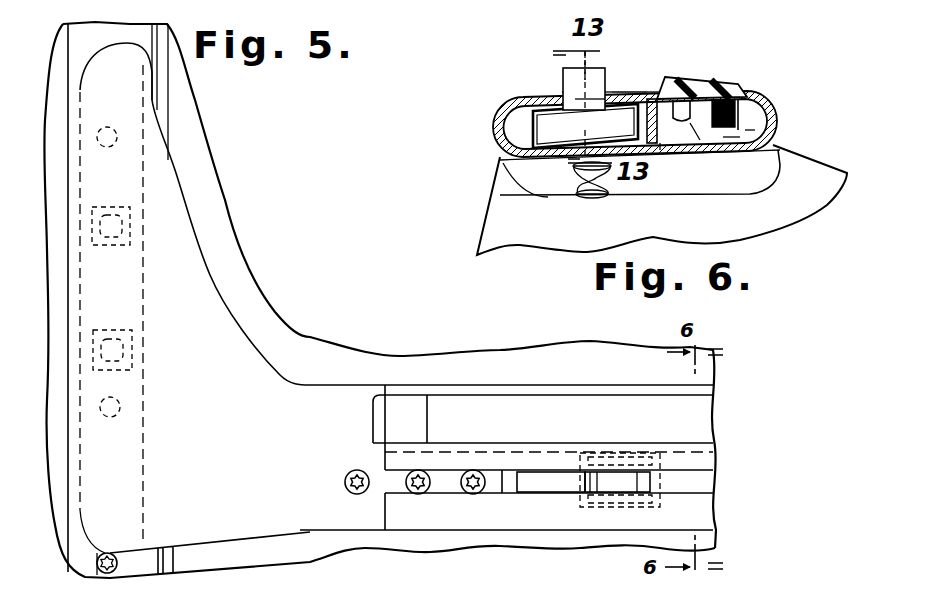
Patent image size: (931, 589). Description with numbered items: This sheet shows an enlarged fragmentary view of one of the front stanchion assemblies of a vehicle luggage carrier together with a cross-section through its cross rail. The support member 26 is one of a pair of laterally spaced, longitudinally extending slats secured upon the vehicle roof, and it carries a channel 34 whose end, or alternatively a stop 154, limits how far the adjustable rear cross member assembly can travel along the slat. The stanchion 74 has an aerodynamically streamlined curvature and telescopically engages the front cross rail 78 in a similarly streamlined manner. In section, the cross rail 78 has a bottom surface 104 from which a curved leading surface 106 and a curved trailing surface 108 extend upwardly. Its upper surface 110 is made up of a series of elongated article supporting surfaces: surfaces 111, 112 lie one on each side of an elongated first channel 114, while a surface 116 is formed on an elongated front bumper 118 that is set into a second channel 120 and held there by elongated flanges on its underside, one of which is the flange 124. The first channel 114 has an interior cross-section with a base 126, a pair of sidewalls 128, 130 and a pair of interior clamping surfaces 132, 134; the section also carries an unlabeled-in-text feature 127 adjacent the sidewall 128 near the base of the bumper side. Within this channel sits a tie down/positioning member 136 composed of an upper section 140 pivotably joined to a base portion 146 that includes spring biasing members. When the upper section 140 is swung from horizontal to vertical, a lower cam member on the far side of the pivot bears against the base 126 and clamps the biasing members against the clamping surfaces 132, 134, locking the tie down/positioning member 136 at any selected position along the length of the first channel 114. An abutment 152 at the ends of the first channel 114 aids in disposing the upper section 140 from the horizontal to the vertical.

In FIG. 5, the support member 26 is at (172, 121).
In FIG. 5, the channel 34 is at (95, 553).
In FIG. 5, the stanchion 74 is at (293, 397).
In FIG. 6, the stanchion 74 is at (821, 182).
In FIG. 5, the front cross rail 78 is at (455, 386).
In FIG. 6, the front cross rail 78 is at (496, 173).
In FIG. 6, the bottom surface 104 is at (654, 188).
In FIG. 6, the curved leading surface 106 is at (780, 110).
In FIG. 6, the curved trailing surface 108 is at (520, 112).
In FIG. 6, the upper surface 110 is at (661, 62).
In FIG. 6, the article supporting surface 111 is at (535, 92).
In FIG. 6, the article supporting surface 112 is at (630, 76).
In FIG. 5, the first channel 114 is at (703, 482).
In FIG. 6, the first channel 114 is at (552, 82).
In FIG. 6, the article supporting surface 116 is at (710, 80).
In FIG. 6, the front bumper 118 is at (731, 90).
In FIG. 6, the second channel 120 is at (752, 127).
In FIG. 6, the flange 124 is at (690, 124).
In FIG. 6, the base 126 is at (553, 166).
In FIG. 6, the stop 127 is at (723, 138).
In FIG. 6, the sidewall 128 is at (663, 142).
In FIG. 6, the sidewall 130 is at (530, 128).
In FIG. 6, the interior clamping surface 132 is at (673, 75).
In FIG. 6, the interior clamping surface 134 is at (530, 110).
In FIG. 6, the tie down/positioning member 136 is at (610, 62).
In FIG. 5, the upper section 140 is at (553, 480).
In FIG. 6, the upper section 140 is at (560, 66).
In FIG. 6, the base portion 146 is at (522, 193).
In FIG. 5, the abutment 152 is at (495, 472).
In FIG. 5, the stop 154 is at (106, 552).